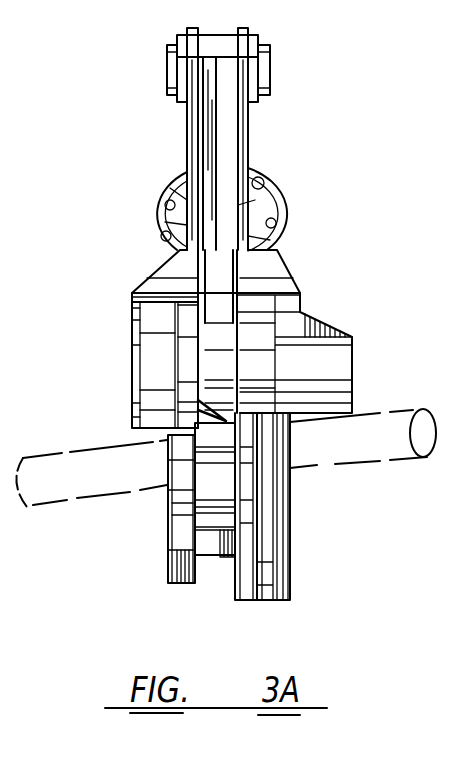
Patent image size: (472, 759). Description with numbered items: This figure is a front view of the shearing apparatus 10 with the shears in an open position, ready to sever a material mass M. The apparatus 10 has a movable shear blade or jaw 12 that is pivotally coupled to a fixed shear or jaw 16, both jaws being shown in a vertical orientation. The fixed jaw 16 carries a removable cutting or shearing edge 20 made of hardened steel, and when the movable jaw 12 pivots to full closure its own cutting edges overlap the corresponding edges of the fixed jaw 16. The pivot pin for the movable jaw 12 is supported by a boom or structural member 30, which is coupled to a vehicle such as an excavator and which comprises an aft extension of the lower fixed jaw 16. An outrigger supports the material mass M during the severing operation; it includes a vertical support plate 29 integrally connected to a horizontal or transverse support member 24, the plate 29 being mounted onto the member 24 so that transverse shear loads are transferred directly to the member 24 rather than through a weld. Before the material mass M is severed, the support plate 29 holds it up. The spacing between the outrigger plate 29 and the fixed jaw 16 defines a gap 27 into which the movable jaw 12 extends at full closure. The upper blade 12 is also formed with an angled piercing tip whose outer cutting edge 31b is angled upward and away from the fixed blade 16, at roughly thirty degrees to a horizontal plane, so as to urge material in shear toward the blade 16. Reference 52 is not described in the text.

The apparatus 10 is at (328, 292).
The movable shear blade or jaw 12 is at (223, 150).
The fixed shear or jaw 16 is at (268, 596).
The cutting or shearing edge 20 is at (240, 447).
The horizontal or transverse support member 24 is at (215, 545).
The gap 27 is at (216, 580).
The vertical support plate 29 is at (182, 527).
The boom or structural member 30 is at (270, 263).
The outer cutting edge 31b is at (133, 417).
The housing 52 is at (157, 322).
The material mass M is at (88, 448).